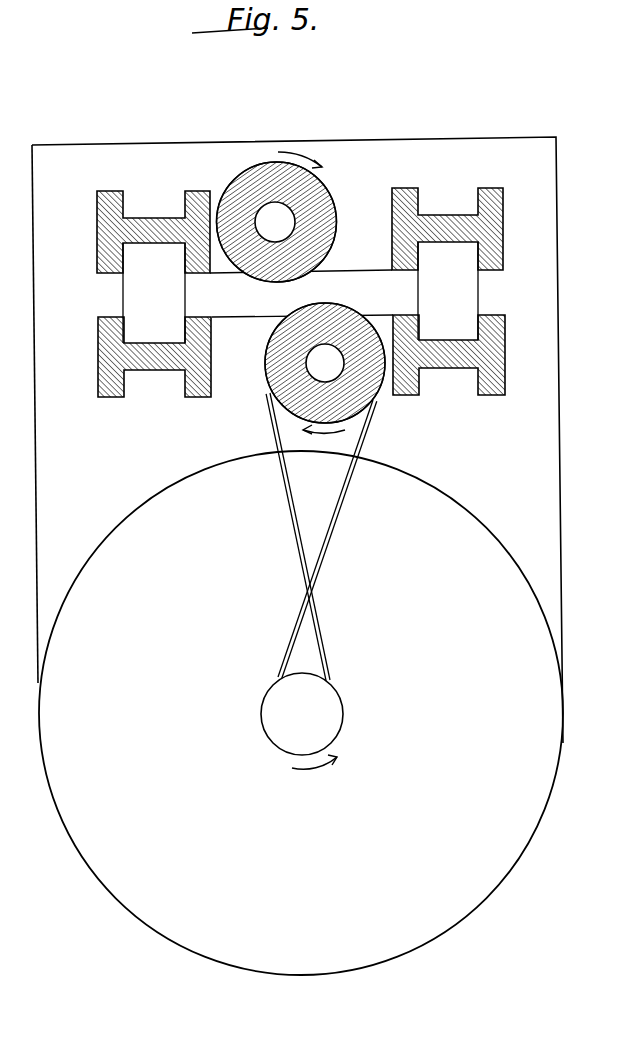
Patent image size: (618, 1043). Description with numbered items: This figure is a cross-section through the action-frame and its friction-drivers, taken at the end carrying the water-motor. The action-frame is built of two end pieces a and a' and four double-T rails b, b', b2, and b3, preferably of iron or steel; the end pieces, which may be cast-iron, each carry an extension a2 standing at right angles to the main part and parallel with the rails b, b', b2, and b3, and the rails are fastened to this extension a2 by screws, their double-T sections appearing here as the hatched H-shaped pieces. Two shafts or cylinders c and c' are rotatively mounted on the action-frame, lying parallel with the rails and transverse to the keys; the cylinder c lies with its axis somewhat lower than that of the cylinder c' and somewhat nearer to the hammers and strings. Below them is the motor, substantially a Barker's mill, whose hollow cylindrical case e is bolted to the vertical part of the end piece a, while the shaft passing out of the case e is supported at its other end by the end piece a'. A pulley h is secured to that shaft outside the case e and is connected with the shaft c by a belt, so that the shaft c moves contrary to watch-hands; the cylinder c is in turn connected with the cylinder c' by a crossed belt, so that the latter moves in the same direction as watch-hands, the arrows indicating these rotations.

The end piece a is at (299, 292).
The end piece a' is at (297, 440).
The extension a2 is at (300, 292).
The double-T rail b is at (153, 227).
The double-T rail b' is at (447, 215).
The double-T rail b2 is at (154, 364).
The double-T rail b3 is at (449, 360).
The shaft or cylinder c is at (311, 368).
The shaft or cylinder c' is at (292, 217).
The hollow cylindrical case e is at (301, 713).
The pulley h is at (302, 721).